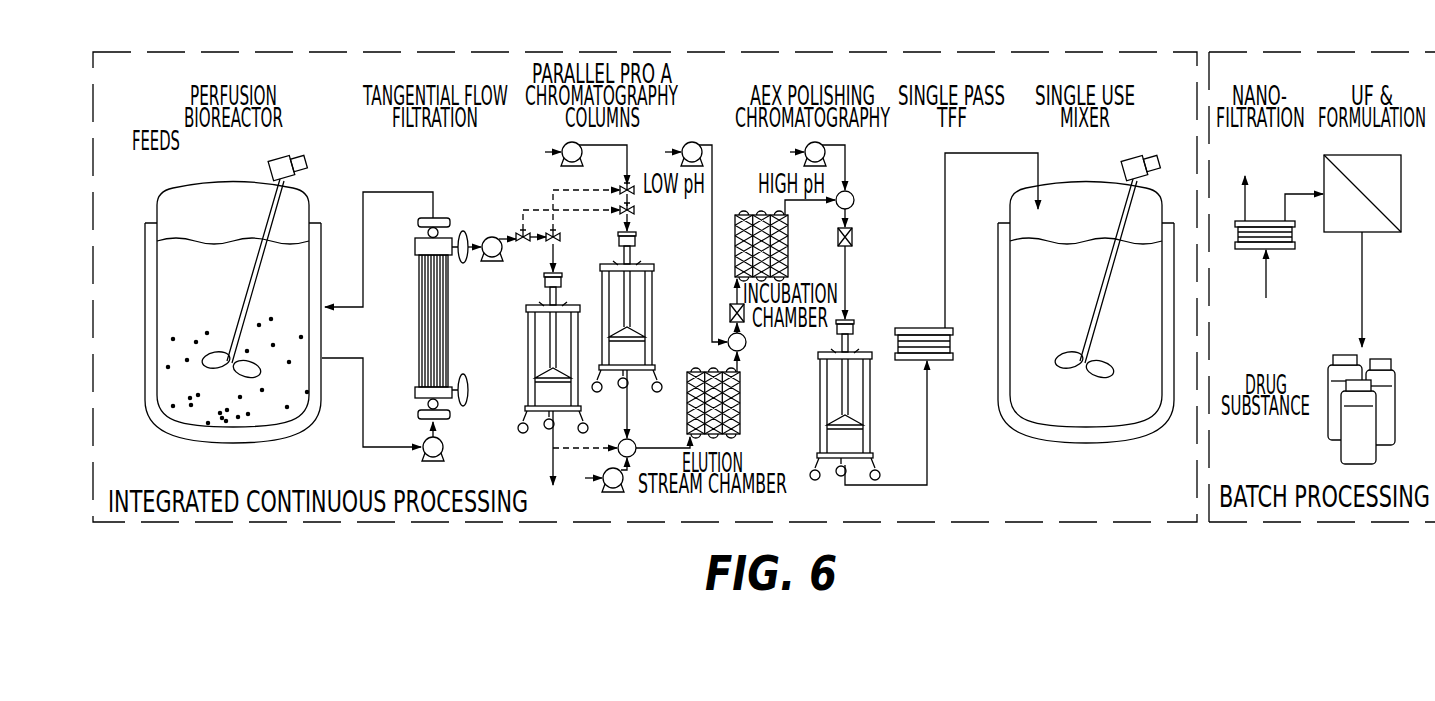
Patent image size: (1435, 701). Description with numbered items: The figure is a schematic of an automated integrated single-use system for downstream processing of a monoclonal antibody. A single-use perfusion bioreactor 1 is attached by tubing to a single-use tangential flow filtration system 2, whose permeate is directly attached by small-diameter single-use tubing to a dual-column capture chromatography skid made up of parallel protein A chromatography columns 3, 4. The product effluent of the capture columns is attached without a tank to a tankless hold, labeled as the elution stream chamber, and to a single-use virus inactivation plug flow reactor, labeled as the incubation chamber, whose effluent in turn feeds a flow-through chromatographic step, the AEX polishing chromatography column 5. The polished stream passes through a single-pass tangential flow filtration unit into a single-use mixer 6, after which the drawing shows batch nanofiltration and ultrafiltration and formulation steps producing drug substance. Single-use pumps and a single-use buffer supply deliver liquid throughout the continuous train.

The perfusion bioreactor 1 is at (214, 297).
The tangential flow filtration unit 2 is at (423, 318).
The first protein A chromatography column 3 is at (560, 327).
The second protein A chromatography column 4 is at (632, 306).
The AEX polishing chromatography column 5 is at (863, 400).
The single use mixer 6 is at (1067, 297).